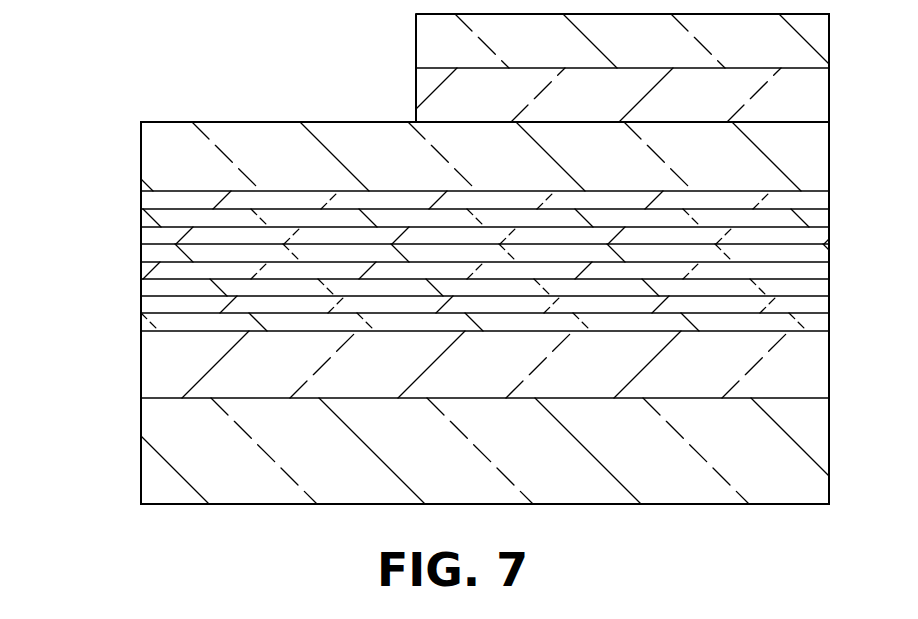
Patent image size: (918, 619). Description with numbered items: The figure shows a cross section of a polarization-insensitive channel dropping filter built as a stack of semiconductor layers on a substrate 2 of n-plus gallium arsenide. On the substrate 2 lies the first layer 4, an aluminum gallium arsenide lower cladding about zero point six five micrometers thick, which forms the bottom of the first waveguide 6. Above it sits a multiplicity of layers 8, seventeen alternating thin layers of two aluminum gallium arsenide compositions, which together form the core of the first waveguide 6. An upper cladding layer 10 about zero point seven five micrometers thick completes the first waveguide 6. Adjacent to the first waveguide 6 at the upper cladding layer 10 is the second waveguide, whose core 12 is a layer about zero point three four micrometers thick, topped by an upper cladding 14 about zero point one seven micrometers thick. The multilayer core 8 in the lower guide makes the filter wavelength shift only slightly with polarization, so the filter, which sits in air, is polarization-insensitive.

The substrate 2 is at (784, 477).
The first layer 4 is at (84, 331).
The first waveguide 6 is at (44, 115).
The multiplicity of layers 8 is at (115, 262).
The upper cladding layer 10 is at (83, 122).
The second waveguide core 12 is at (351, 68).
The upper cladding 14 is at (351, 68).